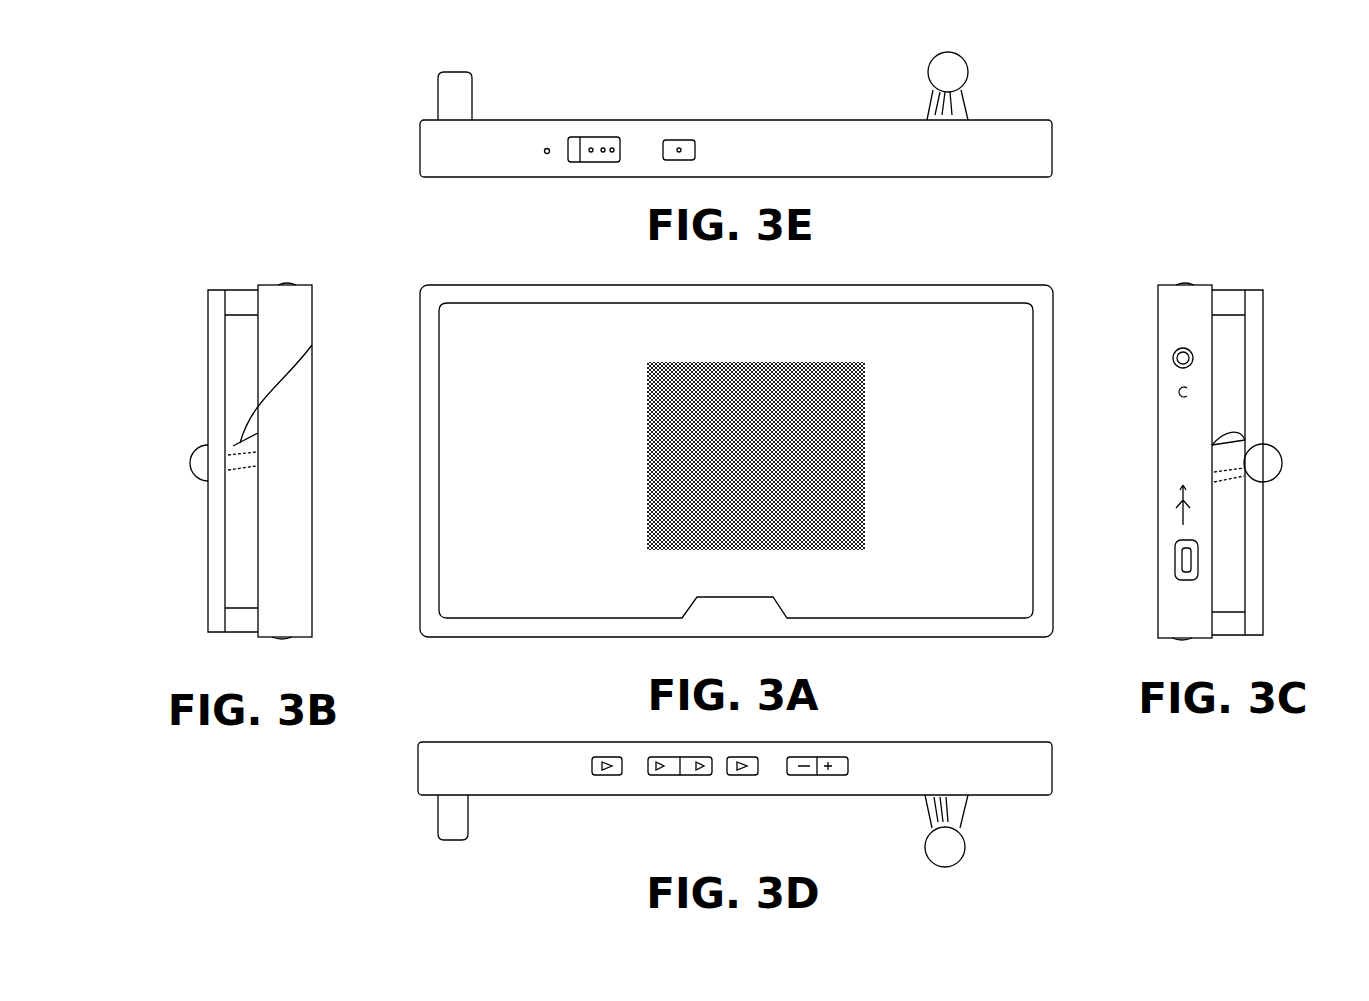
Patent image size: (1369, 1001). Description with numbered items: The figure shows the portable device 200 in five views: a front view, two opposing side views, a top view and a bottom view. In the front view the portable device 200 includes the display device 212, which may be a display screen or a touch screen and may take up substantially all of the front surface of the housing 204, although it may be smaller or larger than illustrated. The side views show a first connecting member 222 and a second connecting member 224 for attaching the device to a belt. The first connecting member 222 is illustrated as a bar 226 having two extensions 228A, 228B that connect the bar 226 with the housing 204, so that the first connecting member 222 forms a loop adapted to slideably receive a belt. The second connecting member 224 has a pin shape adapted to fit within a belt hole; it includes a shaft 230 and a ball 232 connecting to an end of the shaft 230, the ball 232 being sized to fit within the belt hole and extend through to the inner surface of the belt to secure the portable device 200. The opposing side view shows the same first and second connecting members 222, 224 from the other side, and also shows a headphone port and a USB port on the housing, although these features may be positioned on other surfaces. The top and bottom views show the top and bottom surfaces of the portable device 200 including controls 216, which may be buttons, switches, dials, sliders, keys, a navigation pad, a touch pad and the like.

In FIG. 3E, the portable device 200 is at (1052, 132).
In FIG. 3A, the portable device 200 is at (1042, 292).
In FIG. 3B, the portable device 200 is at (290, 283).
In FIG. 3C, the portable device 200 is at (1172, 283).
In FIG. 3D, the portable device 200 is at (418, 757).
In FIG. 3A, the housing 204 is at (826, 322).
In FIG. 3A, the display device 212 is at (790, 550).
In FIG. 3E, the controls 216 is at (672, 140).
In FIG. 3D, the controls 216 is at (795, 775).
In FIG. 3E, the first connecting member 222 is at (470, 84).
In FIG. 3B, the first connecting member 222 is at (208, 355).
In FIG. 3C, the first connecting member 222 is at (1263, 393).
In FIG. 3D, the first connecting member 222 is at (446, 822).
In FIG. 3E, the second connecting member 224 is at (938, 104).
In FIG. 3B, the second connecting member 224 is at (230, 505).
In FIG. 3C, the second connecting member 224 is at (1230, 480).
In FIG. 3D, the second connecting member 224 is at (958, 862).
In FIG. 3B, the bar 226 is at (208, 400).
In FIG. 3C, the bar 226 is at (1258, 578).
In FIG. 3B, the extension 228A is at (240, 292).
In FIG. 3C, the extension 228A is at (1227, 300).
In FIG. 3B, the extension 228B is at (240, 632).
In FIG. 3C, the extension 228B is at (1227, 625).
In FIG. 3E, the shaft 230 is at (965, 104).
In FIG. 3B, the shaft 230 is at (312, 345).
In FIG. 3C, the shaft 230 is at (1238, 445).
In FIG. 3D, the shaft 230 is at (962, 805).
In FIG. 3E, the ball 232 is at (967, 65).
In FIG. 3B, the ball 232 is at (192, 455).
In FIG. 3C, the ball 232 is at (1265, 465).
In FIG. 3D, the ball 232 is at (928, 842).